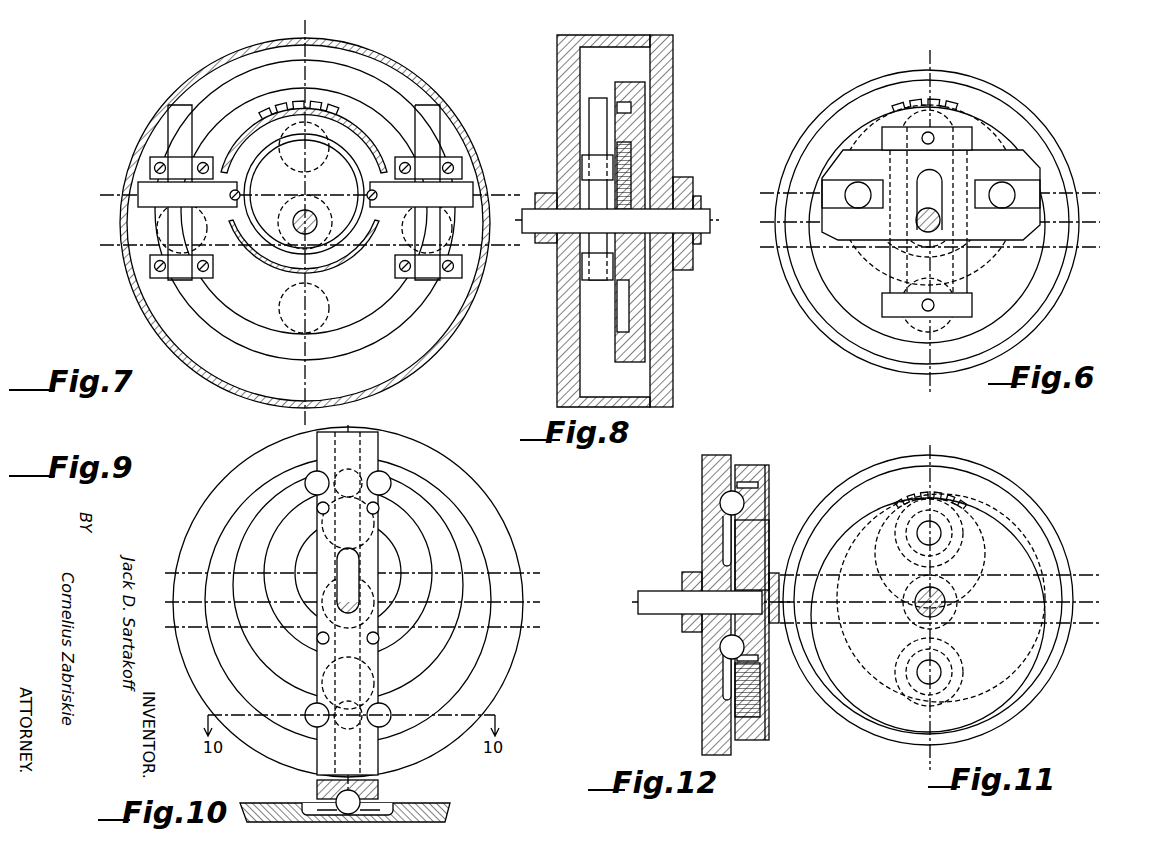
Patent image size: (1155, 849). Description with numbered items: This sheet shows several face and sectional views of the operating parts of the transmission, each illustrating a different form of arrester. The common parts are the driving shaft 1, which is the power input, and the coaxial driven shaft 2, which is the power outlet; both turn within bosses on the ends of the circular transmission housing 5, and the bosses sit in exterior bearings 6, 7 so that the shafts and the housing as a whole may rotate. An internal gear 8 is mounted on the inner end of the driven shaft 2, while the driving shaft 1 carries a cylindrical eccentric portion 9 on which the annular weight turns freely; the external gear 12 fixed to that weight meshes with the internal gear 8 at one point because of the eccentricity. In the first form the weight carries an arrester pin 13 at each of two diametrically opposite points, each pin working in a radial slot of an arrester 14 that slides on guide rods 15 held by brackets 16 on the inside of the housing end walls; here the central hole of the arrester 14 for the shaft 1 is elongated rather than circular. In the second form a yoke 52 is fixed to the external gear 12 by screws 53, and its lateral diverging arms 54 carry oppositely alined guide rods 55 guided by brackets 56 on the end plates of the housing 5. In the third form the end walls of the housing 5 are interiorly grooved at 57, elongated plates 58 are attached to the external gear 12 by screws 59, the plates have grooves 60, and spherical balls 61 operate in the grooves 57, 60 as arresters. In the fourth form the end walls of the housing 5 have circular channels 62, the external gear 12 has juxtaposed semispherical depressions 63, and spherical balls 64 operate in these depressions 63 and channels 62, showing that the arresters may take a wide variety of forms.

In FIG. 7, the driving shaft 1 is at (300, 235).
In FIG. 8, the driving shaft 1 is at (616, 221).
In FIG. 6, the driving shaft 1 is at (942, 238).
In FIG. 9, the driving shaft 1 is at (348, 602).
In FIG. 8, the driven shaft 2 is at (698, 246).
In FIG. 7, the transmission housing 5 is at (432, 350).
In FIG. 8, the transmission housing 5 is at (674, 56).
In FIG. 6, the transmission housing 5 is at (1059, 151).
In FIG. 9, the transmission housing 5 is at (348, 602).
In FIG. 10, the transmission housing 5 is at (450, 810).
In FIG. 12, the transmission housing 5 is at (718, 456).
In FIG. 11, the transmission housing 5 is at (1057, 678).
In FIG. 8, the bearing 6 is at (548, 244).
In FIG. 8, the bearing 7 is at (684, 270).
In FIG. 7, the internal gear 8 is at (352, 347).
In FIG. 8, the internal gear 8 is at (650, 408).
In FIG. 6, the internal gear 8 is at (927, 220).
In FIG. 9, the internal gear 8 is at (468, 592).
In FIG. 12, the internal gear 8 is at (770, 720).
In FIG. 11, the internal gear 8 is at (1010, 684).
In FIG. 7, the eccentric portion 9 is at (304, 194).
In FIG. 6, the eccentric portion 9 is at (985, 152).
In FIG. 9, the eccentric portion 9 is at (348, 573).
In FIG. 12, the eccentric portion 9 is at (755, 570).
In FIG. 11, the eccentric portion 9 is at (972, 540).
In FIG. 7, the external gear 12 is at (255, 318).
In FIG. 8, the external gear 12 is at (624, 277).
In FIG. 6, the external gear 12 is at (877, 270).
In FIG. 9, the external gear 12 is at (416, 634).
In FIG. 12, the external gear 12 is at (744, 513).
In FIG. 11, the external gear 12 is at (987, 632).
In FIG. 6, the arrester pin 13 is at (840, 183).
In FIG. 6, the arrester 14 is at (870, 130).
In FIG. 6, the guide rod 15 is at (948, 268).
In FIG. 6, the bracket 16 is at (972, 305).
In FIG. 7, the yoke 52 is at (344, 135).
In FIG. 7, the screw 53 is at (235, 188).
In FIG. 7, the lateral diverging arm 54 is at (468, 192).
In FIG. 7, the guide rod 55 is at (192, 150).
In FIG. 8, the guide rod 55 is at (600, 97).
In FIG. 7, the bracket 56 is at (153, 158).
In FIG. 8, the bracket 56 is at (588, 165).
In FIG. 10, the groove 57 is at (388, 807).
In FIG. 9, the elongated plate 58 is at (378, 559).
In FIG. 10, the elongated plate 58 is at (315, 784).
In FIG. 9, the screw 59 is at (378, 512).
In FIG. 9, the groove 60 is at (357, 690).
In FIG. 10, the groove 60 is at (362, 794).
In FIG. 9, the spherical ball 61 is at (432, 482).
In FIG. 10, the spherical ball 61 is at (308, 806).
In FIG. 12, the circular channel 62 is at (722, 524).
In FIG. 11, the circular channel 62 is at (893, 672).
In FIG. 12, the semispherical depression 63 is at (745, 499).
In FIG. 12, the spherical ball 64 is at (728, 497).
In FIG. 11, the spherical ball 64 is at (895, 513).